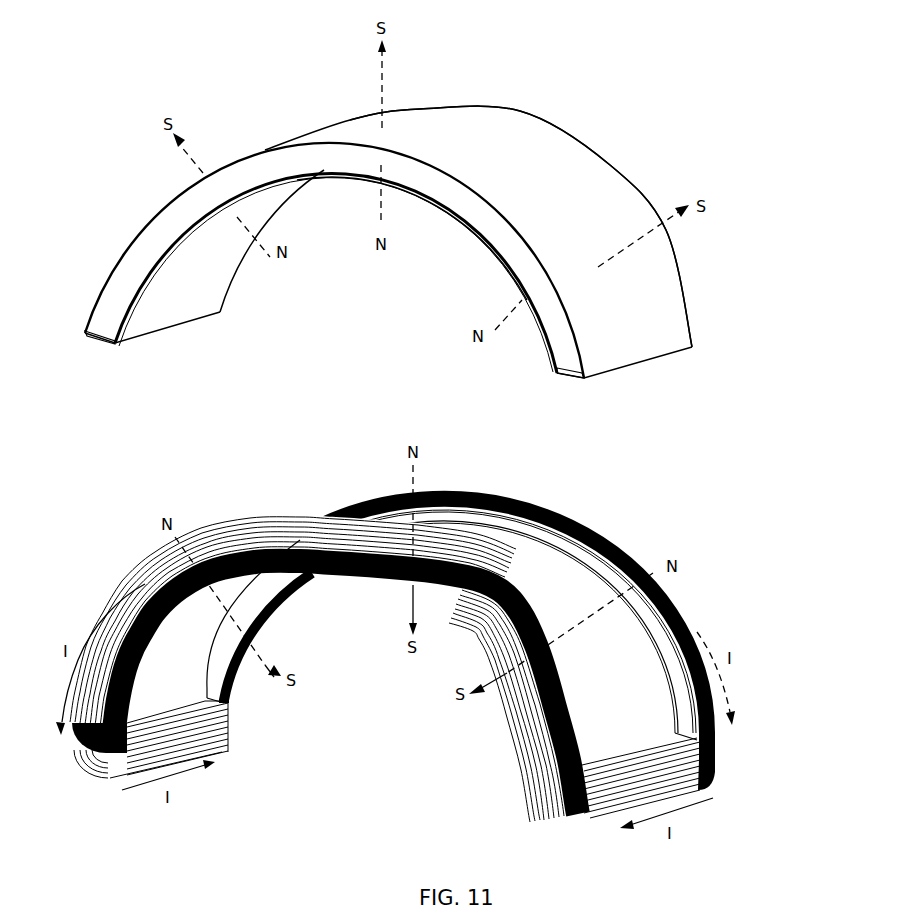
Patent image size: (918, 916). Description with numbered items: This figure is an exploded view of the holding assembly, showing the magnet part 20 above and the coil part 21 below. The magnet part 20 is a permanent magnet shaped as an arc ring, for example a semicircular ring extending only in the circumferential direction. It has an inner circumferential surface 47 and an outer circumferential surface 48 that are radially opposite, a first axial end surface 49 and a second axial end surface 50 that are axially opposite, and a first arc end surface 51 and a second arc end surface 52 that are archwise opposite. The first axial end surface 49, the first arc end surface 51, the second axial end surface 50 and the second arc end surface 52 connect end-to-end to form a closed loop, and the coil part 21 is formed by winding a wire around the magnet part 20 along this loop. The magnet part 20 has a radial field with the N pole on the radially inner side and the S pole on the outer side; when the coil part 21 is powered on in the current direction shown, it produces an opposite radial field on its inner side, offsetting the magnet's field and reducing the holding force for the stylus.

The magnet part 20 is at (707, 322).
The coil part 21 is at (727, 747).
The inner circumferential surface 47 is at (203, 272).
The outer circumferential surface 48 is at (510, 146).
The first axial end surface 49 is at (466, 207).
The second axial end surface 50 is at (606, 176).
The first arc end surface 51 is at (141, 338).
The second arc end surface 52 is at (633, 373).